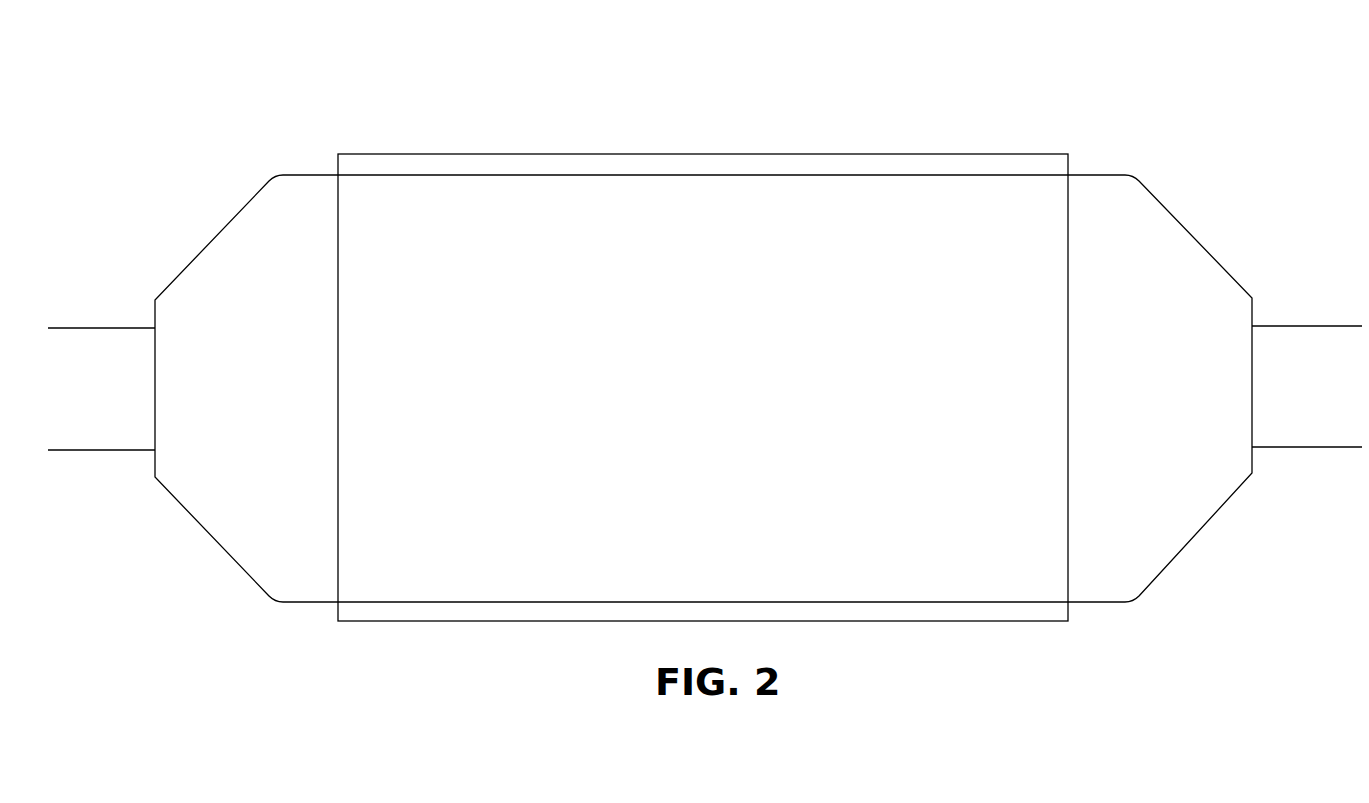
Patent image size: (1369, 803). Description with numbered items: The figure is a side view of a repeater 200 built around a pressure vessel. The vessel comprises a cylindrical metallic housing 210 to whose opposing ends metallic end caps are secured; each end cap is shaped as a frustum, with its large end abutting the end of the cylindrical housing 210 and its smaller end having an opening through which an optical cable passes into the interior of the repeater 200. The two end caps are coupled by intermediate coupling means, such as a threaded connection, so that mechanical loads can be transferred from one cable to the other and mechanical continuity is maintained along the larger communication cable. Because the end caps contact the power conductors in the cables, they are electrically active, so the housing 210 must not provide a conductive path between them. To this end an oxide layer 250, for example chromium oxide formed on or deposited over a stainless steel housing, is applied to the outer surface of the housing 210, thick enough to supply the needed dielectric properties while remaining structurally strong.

The repeater 200 is at (404, 109).
The cylindrical metallic housing 210 is at (703, 192).
The oxide layer 250 is at (938, 162).